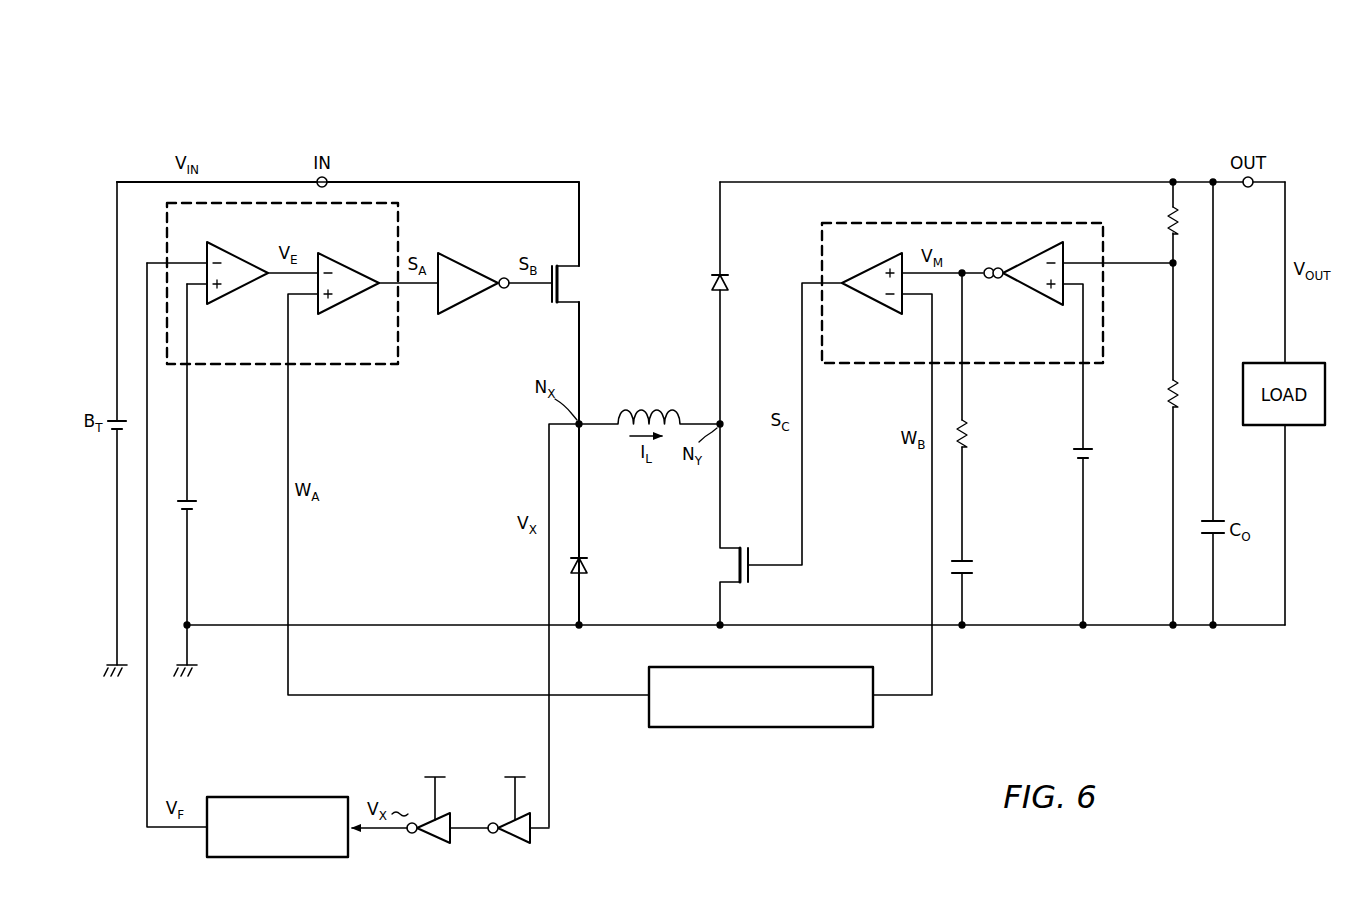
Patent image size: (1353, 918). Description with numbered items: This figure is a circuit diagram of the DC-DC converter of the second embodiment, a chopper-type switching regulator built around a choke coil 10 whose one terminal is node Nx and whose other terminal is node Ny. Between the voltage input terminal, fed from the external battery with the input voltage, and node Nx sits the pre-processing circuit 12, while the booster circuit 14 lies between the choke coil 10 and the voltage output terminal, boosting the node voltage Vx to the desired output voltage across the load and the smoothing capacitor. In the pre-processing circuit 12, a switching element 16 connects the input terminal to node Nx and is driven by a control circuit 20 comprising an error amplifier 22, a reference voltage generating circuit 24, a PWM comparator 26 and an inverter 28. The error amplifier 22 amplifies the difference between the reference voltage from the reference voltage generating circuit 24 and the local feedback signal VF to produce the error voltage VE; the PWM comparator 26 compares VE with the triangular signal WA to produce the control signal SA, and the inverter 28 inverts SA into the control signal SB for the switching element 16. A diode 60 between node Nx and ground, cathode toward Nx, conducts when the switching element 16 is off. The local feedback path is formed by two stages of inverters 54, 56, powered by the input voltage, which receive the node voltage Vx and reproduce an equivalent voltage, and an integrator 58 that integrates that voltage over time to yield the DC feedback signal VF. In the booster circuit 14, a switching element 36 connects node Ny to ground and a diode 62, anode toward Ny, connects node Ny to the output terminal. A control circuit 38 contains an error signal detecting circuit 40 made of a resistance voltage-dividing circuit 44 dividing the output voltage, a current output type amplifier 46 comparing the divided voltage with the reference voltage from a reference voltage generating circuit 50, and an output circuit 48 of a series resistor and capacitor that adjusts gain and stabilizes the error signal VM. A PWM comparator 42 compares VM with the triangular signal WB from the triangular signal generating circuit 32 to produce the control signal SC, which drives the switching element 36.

The choke coil 10 is at (657, 405).
The pre-processing circuit 12 is at (408, 165).
The booster circuit 14 is at (831, 165).
The switching element 16 is at (549, 295).
The control circuit 20 is at (282, 283).
The error amplifier 22 is at (237, 257).
The reference voltage generating circuit 24 is at (197, 503).
The PWM comparator 26 is at (349, 266).
The inverter 28 is at (470, 266).
The triangular signal generating circuit 32 is at (762, 728).
The switching element 36 is at (752, 574).
The control circuit 38 is at (990, 200).
The error signal detecting circuit 40 is at (884, 367).
The PWM comparator 42 is at (872, 303).
The resistance voltage-dividing circuit 44 is at (1167, 222).
The current output type amplifier 46 is at (1032, 291).
The output circuit 48 is at (964, 500).
The reference voltage generating circuit 50 is at (1093, 454).
The inverter 54 is at (514, 842).
The inverter 56 is at (432, 842).
The integrator 58 is at (280, 858).
The diode 60 is at (590, 560).
The diode 62 is at (711, 283).